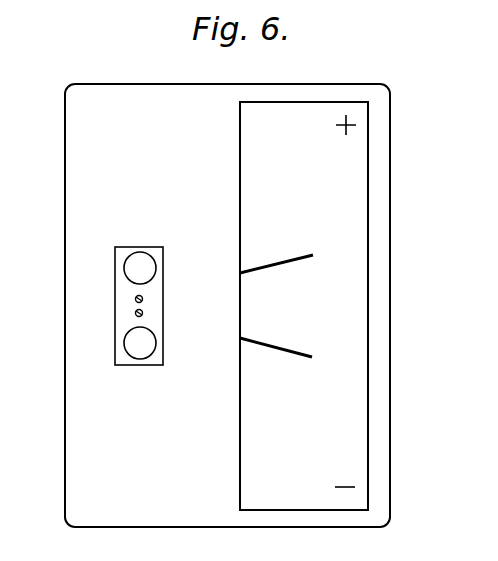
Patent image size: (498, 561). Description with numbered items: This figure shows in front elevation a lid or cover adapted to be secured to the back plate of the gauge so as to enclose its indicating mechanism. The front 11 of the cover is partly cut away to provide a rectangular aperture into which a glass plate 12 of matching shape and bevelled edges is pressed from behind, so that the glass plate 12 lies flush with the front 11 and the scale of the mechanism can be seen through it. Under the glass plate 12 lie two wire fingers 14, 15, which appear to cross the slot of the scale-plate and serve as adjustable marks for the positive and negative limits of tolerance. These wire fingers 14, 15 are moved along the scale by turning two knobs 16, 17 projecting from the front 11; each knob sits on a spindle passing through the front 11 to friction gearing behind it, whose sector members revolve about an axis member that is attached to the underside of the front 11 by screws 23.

The front 11 is at (82, 190).
The glass plate 12 is at (338, 200).
The wire finger 14 is at (295, 262).
The wire finger 15 is at (295, 348).
The knob 16 is at (130, 267).
The knob 17 is at (134, 343).
The screws 23 is at (135, 313).